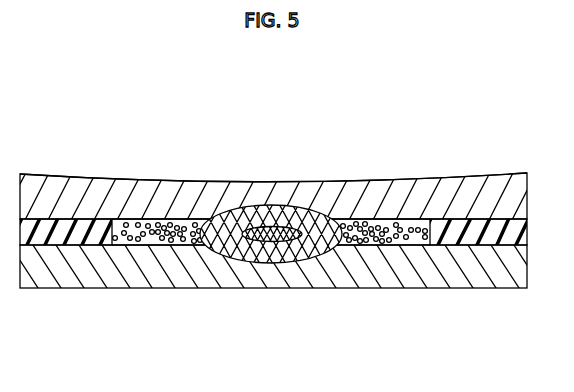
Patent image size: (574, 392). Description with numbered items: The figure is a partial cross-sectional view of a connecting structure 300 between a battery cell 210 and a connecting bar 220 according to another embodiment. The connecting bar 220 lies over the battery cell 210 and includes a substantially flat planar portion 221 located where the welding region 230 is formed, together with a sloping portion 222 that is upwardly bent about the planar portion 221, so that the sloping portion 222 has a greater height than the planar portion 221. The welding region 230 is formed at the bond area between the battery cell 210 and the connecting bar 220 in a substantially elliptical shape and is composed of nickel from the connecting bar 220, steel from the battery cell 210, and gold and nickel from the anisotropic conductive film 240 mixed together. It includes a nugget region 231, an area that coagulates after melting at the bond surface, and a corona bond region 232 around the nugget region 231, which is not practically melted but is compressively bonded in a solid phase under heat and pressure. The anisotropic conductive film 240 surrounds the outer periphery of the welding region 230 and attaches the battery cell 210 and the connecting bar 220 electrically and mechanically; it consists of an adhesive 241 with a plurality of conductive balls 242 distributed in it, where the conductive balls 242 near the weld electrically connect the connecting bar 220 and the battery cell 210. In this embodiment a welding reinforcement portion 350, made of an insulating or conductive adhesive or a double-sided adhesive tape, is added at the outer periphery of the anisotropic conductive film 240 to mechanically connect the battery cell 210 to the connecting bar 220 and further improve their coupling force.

The connecting structure 300 is at (463, 129).
The connecting bar 220 is at (290, 106).
The planar portion 221 is at (310, 178).
The sloping portion 222 is at (432, 176).
The battery cell 210 is at (396, 273).
The welding reinforcement portion 350 is at (55, 244).
The anisotropic conductive film 240 is at (108, 350).
The adhesive 241 is at (123, 245).
The conductive balls 242 is at (165, 245).
The welding region 230 is at (247, 350).
The nugget region 231 is at (265, 242).
The corona bond region 232 is at (305, 261).